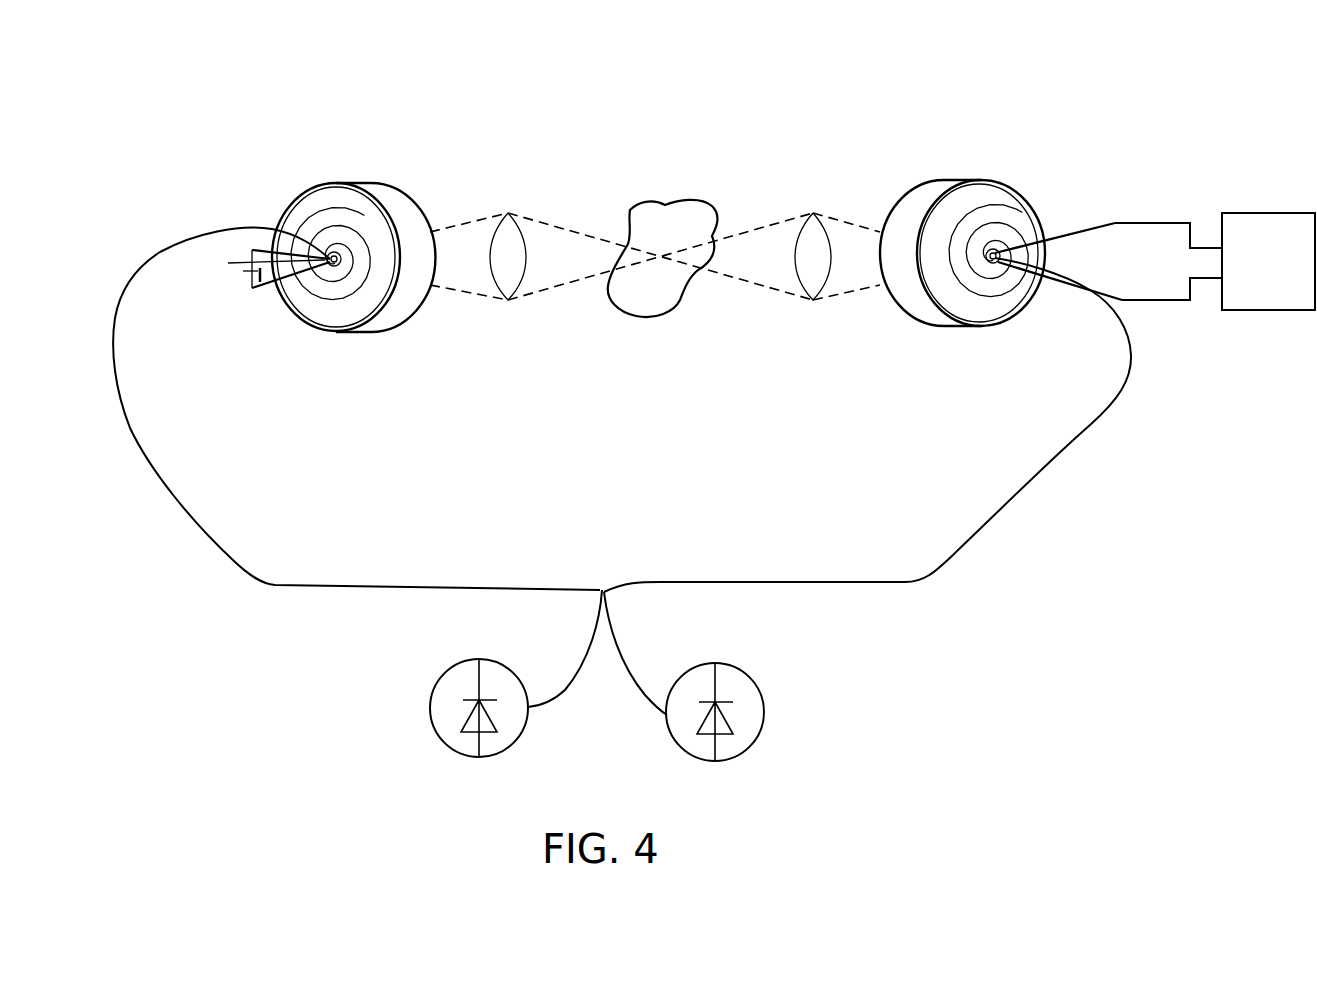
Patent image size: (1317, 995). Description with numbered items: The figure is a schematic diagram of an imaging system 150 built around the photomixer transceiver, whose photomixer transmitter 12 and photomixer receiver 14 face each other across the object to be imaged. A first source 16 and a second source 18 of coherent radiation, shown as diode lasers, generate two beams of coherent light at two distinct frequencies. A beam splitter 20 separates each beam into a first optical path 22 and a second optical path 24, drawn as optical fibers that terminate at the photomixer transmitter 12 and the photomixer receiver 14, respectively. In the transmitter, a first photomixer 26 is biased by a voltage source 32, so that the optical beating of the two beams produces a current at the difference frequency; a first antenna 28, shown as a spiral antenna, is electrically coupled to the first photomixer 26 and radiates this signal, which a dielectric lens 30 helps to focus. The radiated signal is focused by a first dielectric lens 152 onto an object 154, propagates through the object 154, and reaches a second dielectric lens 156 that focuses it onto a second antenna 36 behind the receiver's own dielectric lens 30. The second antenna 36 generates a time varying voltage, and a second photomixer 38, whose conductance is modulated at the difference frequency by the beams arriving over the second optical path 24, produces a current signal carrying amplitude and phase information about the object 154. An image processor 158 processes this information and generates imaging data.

The imaging system 150 is at (666, 83).
The photomixer transmitter 12 is at (311, 242).
The photomixer receiver 14 is at (1021, 221).
The first source of coherent radiation 16 is at (442, 680).
The second source of coherent radiation 18 is at (747, 668).
The beam splitter 20 is at (607, 597).
The first optical path 22 is at (460, 587).
The second optical path 24 is at (793, 582).
The first photomixer 26 is at (340, 250).
The first antenna 28 is at (327, 303).
The dielectric lens 30 is at (408, 216).
The voltage source 32 is at (247, 277).
The second antenna 36 is at (997, 297).
The second photomixer 38 is at (1000, 248).
The first dielectric lens 152 is at (508, 300).
The object 154 is at (694, 200).
The second dielectric lens 156 is at (815, 300).
The image processor 158 is at (1262, 311).